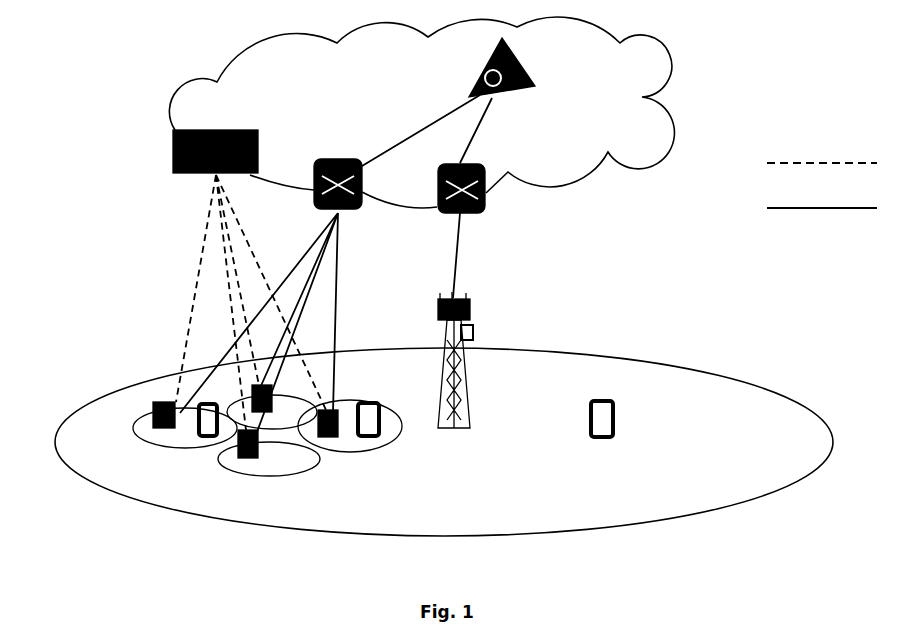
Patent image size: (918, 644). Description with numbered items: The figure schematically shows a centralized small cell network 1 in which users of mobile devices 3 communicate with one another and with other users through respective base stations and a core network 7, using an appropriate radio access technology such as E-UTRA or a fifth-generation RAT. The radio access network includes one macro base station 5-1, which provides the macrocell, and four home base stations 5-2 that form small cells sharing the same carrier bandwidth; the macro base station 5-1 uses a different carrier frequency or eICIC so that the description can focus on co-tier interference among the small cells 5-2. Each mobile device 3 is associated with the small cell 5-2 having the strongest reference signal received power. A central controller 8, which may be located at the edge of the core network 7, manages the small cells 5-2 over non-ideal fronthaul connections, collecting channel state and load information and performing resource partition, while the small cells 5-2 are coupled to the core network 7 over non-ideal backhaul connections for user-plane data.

The centralized small cell network 1 is at (97, 547).
The mobile device 3 is at (372, 402).
The macro base station 5-1 is at (470, 320).
The home base station 5-2 is at (153, 406).
The core network 7 is at (665, 66).
The central controller 8 is at (172, 136).